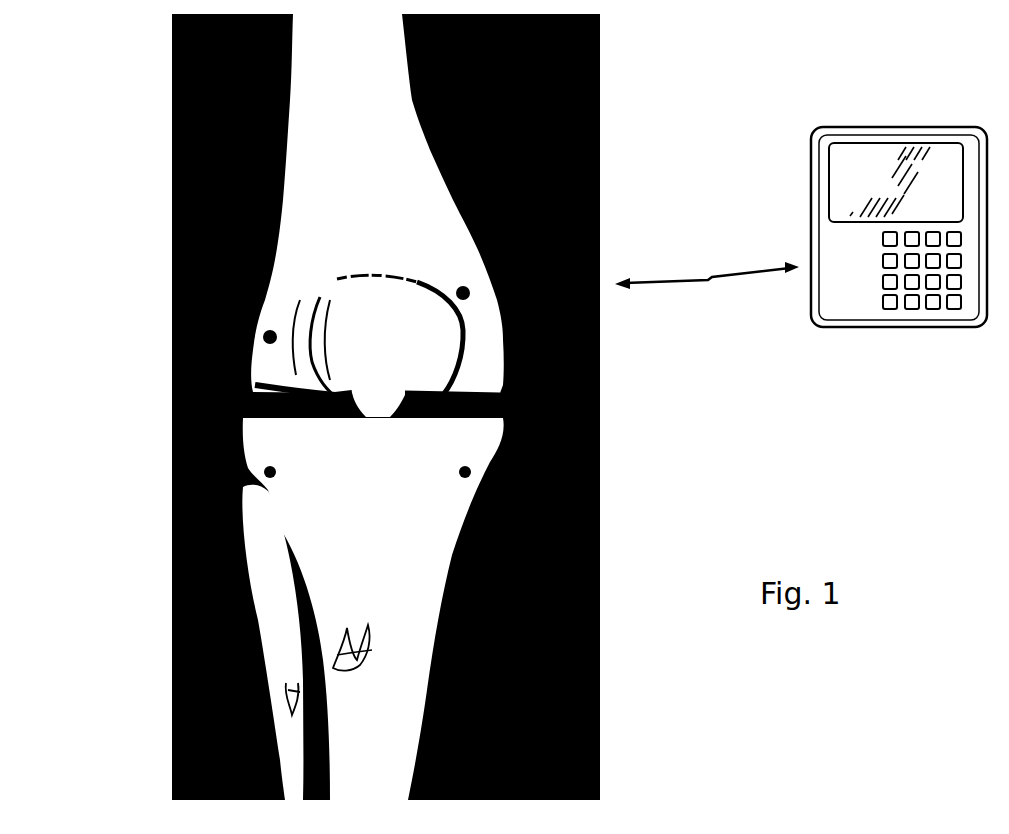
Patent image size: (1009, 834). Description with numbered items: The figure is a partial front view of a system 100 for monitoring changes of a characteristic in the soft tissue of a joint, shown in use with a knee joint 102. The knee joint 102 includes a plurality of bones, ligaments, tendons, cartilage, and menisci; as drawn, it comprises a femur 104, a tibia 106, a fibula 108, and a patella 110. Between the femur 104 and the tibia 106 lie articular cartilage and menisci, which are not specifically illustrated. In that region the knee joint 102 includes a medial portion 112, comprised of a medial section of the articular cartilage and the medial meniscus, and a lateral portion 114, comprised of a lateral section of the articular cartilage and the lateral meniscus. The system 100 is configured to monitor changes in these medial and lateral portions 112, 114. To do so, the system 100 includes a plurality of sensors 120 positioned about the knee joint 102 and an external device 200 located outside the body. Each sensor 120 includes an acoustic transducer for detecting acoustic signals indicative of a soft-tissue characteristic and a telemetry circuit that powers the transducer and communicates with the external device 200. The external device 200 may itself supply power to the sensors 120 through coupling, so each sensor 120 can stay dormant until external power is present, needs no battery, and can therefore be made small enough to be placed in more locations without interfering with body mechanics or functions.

The system 100 is at (100, 93).
The knee joint 102 is at (152, 370).
The femur 104 is at (392, 181).
The tibia 106 is at (405, 598).
The fibula 108 is at (278, 663).
The patella 110 is at (404, 365).
The medial portion 112 is at (508, 413).
The lateral portion 114 is at (254, 404).
The sensors 120 is at (274, 329).
The external device 200 is at (888, 116).